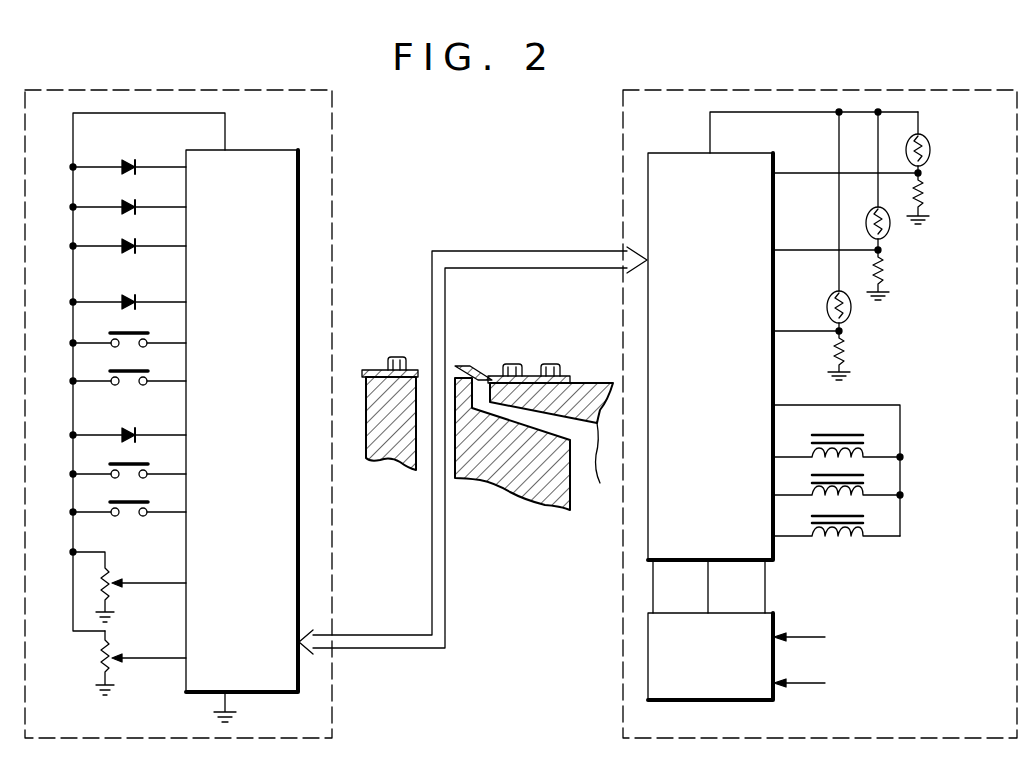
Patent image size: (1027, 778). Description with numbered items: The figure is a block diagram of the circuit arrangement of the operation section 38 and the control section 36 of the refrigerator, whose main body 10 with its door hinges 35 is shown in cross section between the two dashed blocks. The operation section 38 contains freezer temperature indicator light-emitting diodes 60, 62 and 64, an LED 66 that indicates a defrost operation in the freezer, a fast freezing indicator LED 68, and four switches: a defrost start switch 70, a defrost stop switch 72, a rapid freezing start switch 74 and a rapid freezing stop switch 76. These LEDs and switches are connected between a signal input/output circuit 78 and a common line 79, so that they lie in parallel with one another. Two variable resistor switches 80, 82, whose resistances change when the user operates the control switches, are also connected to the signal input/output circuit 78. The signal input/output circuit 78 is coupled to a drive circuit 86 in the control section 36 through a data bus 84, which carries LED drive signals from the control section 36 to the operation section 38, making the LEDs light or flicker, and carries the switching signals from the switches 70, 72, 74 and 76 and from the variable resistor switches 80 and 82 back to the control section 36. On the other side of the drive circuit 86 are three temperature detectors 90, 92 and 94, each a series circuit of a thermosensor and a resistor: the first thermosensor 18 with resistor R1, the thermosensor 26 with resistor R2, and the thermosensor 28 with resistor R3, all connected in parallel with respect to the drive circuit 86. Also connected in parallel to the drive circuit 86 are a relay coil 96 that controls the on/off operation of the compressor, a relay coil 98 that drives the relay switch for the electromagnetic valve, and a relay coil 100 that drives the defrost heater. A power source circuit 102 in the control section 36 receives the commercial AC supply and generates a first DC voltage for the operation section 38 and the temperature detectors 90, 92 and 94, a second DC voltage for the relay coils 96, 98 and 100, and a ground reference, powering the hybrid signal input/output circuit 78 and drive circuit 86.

The operation section 38 is at (258, 89).
The control section 36 is at (915, 89).
The signal input/output circuit 78 is at (286, 152).
The line 79 is at (73, 414).
The freezer temperature indicator light-emitting diode 60 is at (126, 166).
The freezer temperature indicator light-emitting diode 62 is at (130, 205).
The freezer temperature indicator light-emitting diode 64 is at (130, 244).
The defrost indicator LED 66 is at (128, 300).
The fast freezing indicator LED 68 is at (126, 432).
The defrost start switch 70 is at (135, 332).
The defrost stop switch 72 is at (135, 371).
The rapid freezing start switch 74 is at (135, 463).
The rapid freezing stop switch 76 is at (135, 502).
The variable resistor switch 80 is at (110, 594).
The variable resistor switch 82 is at (110, 670).
The data bus 84 is at (446, 626).
The hinge 35 is at (383, 368).
The refrigerator main body 10 is at (538, 372).
The drive circuit 86 is at (670, 160).
The first thermosensor 18 is at (930, 152).
The thermosensor 26 is at (868, 218).
The thermosensor 28 is at (830, 300).
The temperature detector 90 is at (924, 173).
The temperature detector 92 is at (884, 250).
The temperature detector 94 is at (845, 331).
The resistor R1 is at (921, 194).
The resistor R2 is at (882, 270).
The resistor R3 is at (851, 355).
The relay coil 96 is at (802, 445).
The relay coil 98 is at (808, 494).
The relay coil 100 is at (810, 535).
The power source circuit 102 is at (748, 701).